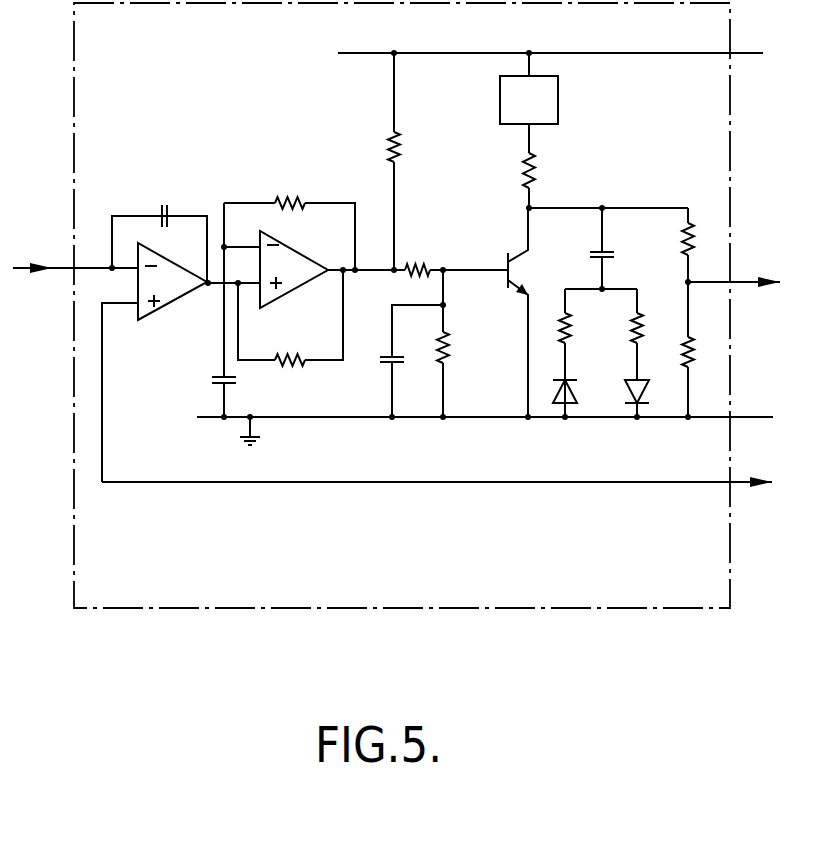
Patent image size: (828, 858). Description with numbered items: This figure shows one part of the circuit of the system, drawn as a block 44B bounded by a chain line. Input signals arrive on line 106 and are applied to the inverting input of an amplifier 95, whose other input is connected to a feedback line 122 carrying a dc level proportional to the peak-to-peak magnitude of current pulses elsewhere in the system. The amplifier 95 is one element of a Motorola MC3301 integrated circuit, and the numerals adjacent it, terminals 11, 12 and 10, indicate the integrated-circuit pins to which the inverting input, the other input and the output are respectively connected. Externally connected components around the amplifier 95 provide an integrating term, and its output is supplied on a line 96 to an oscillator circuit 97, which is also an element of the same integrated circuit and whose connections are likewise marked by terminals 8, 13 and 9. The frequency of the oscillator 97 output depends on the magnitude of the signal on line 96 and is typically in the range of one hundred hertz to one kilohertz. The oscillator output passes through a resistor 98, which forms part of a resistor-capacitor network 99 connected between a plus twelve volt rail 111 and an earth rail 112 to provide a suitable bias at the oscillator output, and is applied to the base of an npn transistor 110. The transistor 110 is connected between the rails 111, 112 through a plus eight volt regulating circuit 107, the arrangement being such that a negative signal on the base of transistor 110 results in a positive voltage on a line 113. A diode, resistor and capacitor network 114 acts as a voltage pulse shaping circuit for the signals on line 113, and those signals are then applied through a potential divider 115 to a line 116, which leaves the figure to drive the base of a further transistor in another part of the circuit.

The control circuit block 44B is at (210, 575).
The line 106 is at (53, 263).
The terminal 11 is at (129, 253).
The terminal 12 is at (121, 392).
The terminal 10 is at (213, 281).
The amplifier 95 is at (160, 295).
The line 96 is at (217, 282).
The terminal 8 is at (242, 238).
The terminal 13 is at (252, 297).
The terminal 9 is at (340, 261).
The oscillator circuit 97 is at (287, 275).
The resistor 98 is at (417, 265).
The resistor-capacitor network 99 is at (452, 364).
The npn transistor 110 is at (518, 291).
The regulating circuit 107 is at (510, 98).
The line 113 is at (564, 205).
The rail 111 is at (645, 53).
The diode, resistor and capacitor network 114 is at (633, 274).
The line 116 is at (743, 280).
The potential divider 115 is at (705, 352).
The earth rail 112 is at (357, 420).
The feedback line 122 is at (330, 485).